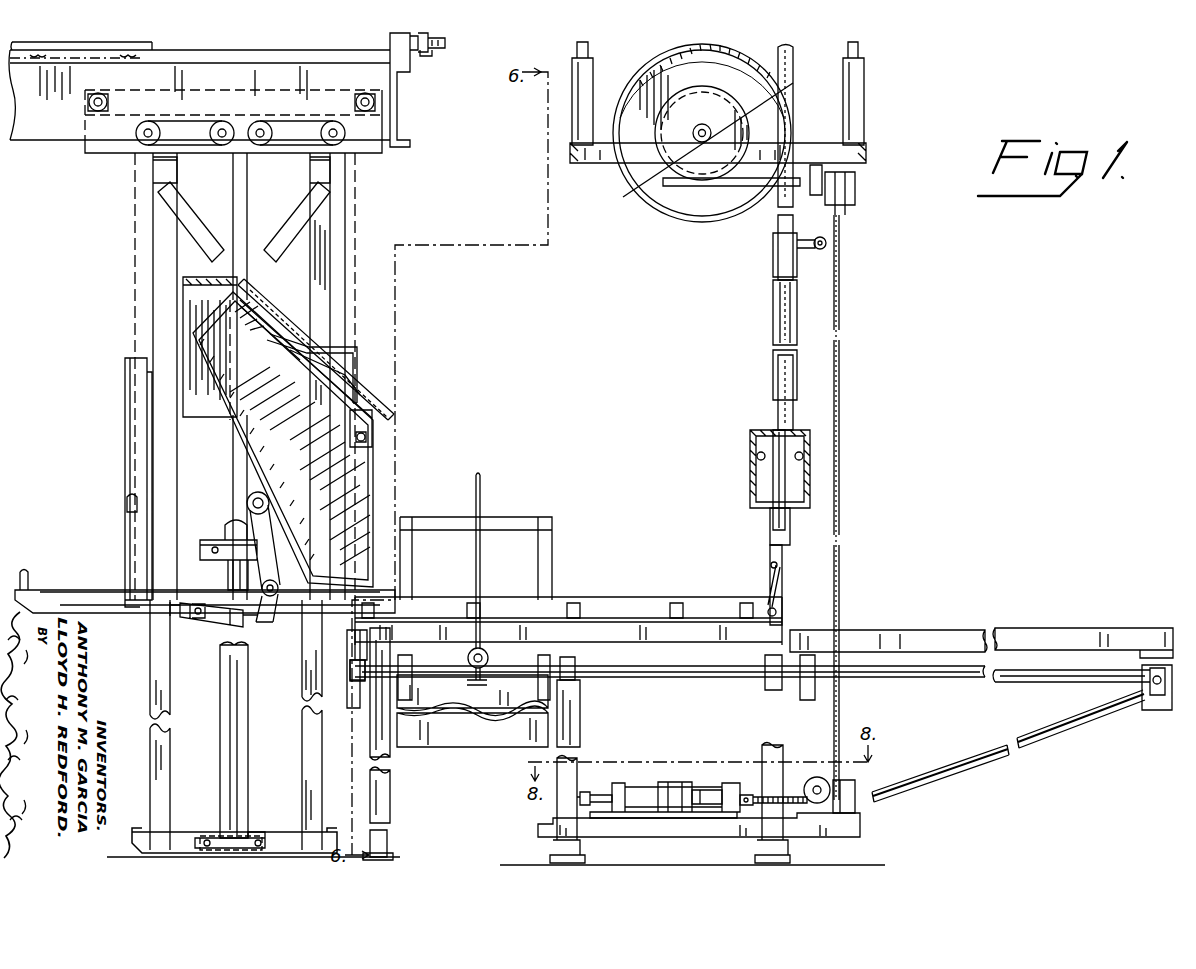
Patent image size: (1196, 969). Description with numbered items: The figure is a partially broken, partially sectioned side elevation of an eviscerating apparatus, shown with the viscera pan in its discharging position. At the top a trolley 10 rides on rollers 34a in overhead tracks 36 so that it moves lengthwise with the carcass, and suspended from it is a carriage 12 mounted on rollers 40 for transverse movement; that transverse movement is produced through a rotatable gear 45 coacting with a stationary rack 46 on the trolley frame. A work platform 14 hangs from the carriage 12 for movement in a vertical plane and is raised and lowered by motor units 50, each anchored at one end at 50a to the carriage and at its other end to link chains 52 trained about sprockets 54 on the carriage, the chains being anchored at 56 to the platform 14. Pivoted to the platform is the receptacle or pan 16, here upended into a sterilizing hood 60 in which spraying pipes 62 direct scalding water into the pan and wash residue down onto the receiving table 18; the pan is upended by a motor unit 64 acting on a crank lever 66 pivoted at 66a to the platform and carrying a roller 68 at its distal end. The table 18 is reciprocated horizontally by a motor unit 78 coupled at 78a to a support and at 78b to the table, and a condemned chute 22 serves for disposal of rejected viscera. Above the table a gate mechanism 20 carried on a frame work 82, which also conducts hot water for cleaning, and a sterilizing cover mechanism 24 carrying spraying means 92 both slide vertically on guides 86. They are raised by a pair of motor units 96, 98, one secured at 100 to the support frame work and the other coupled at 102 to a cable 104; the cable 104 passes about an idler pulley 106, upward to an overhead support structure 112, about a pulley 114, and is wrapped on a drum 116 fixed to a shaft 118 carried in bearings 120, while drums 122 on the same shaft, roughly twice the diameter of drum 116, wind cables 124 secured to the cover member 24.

The trolley 10 is at (418, 72).
The carriage 12 is at (378, 160).
The work platform 14 is at (100, 588).
The receptacle or pan 16 is at (190, 340).
The receiving table 18 is at (608, 596).
The gate mechanism 20 is at (788, 596).
The condemned chute 22 is at (495, 515).
The sterilizing cover mechanism 24 is at (745, 470).
The rollers 34a is at (432, 56).
The overhead tracks 36 is at (446, 43).
The rollers 40 is at (84, 108).
The rotatable gear 45 is at (140, 58).
The stationary rack 46 is at (152, 46).
The motor units 50 is at (230, 692).
The anchor point 50a is at (212, 835).
The link chains 52 is at (232, 203).
The sprockets 54 is at (135, 142).
The anchor point 56 is at (364, 445).
The sterilizing hood 60 is at (258, 300).
The spraying pipes 62 is at (290, 342).
The motor unit 64 is at (220, 630).
The crank lever 66 is at (250, 512).
The pivot 66a is at (272, 628).
The roller 68 is at (247, 500).
The motor unit 78 is at (1015, 668).
The coupling 78a is at (1158, 712).
The coupling 78b is at (353, 686).
The frame work 82 is at (825, 250).
The vertical guides 86 is at (797, 322).
The spraying means 92 is at (752, 438).
The motor unit 96 is at (652, 782).
The motor unit 98 is at (710, 788).
The coupling 100 is at (590, 792).
The coupling 102 is at (740, 792).
The cable 104 is at (745, 200).
The idler pulley 106 is at (825, 800).
The overhead support structure 112 is at (572, 115).
The pulley 114 is at (866, 154).
The drum 116 is at (668, 98).
The shaft 118 is at (793, 83).
The bearings 120 is at (623, 197).
The drums 122 is at (770, 128).
The cables 124 is at (797, 366).